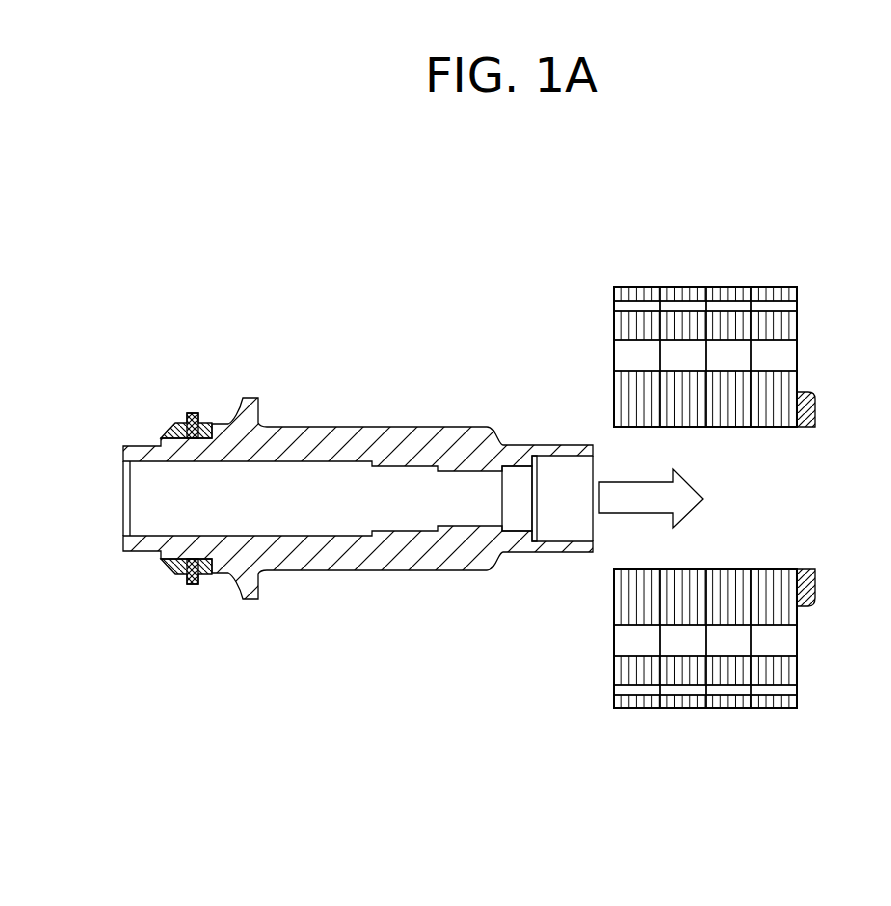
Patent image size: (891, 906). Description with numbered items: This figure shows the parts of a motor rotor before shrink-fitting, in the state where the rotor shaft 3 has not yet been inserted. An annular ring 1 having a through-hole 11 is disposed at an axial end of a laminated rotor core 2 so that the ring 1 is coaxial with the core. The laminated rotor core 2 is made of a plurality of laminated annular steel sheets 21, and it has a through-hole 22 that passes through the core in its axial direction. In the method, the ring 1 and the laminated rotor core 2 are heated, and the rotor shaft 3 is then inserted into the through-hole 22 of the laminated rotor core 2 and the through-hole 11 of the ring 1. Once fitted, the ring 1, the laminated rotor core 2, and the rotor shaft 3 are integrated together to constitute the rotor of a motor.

The ring 1 is at (816, 399).
The laminated rotor core 2 is at (787, 325).
The rotor shaft 3 is at (424, 427).
The through-hole 11 is at (792, 545).
The laminated annular steel sheets 21 is at (637, 292).
The through-hole 22 is at (763, 457).